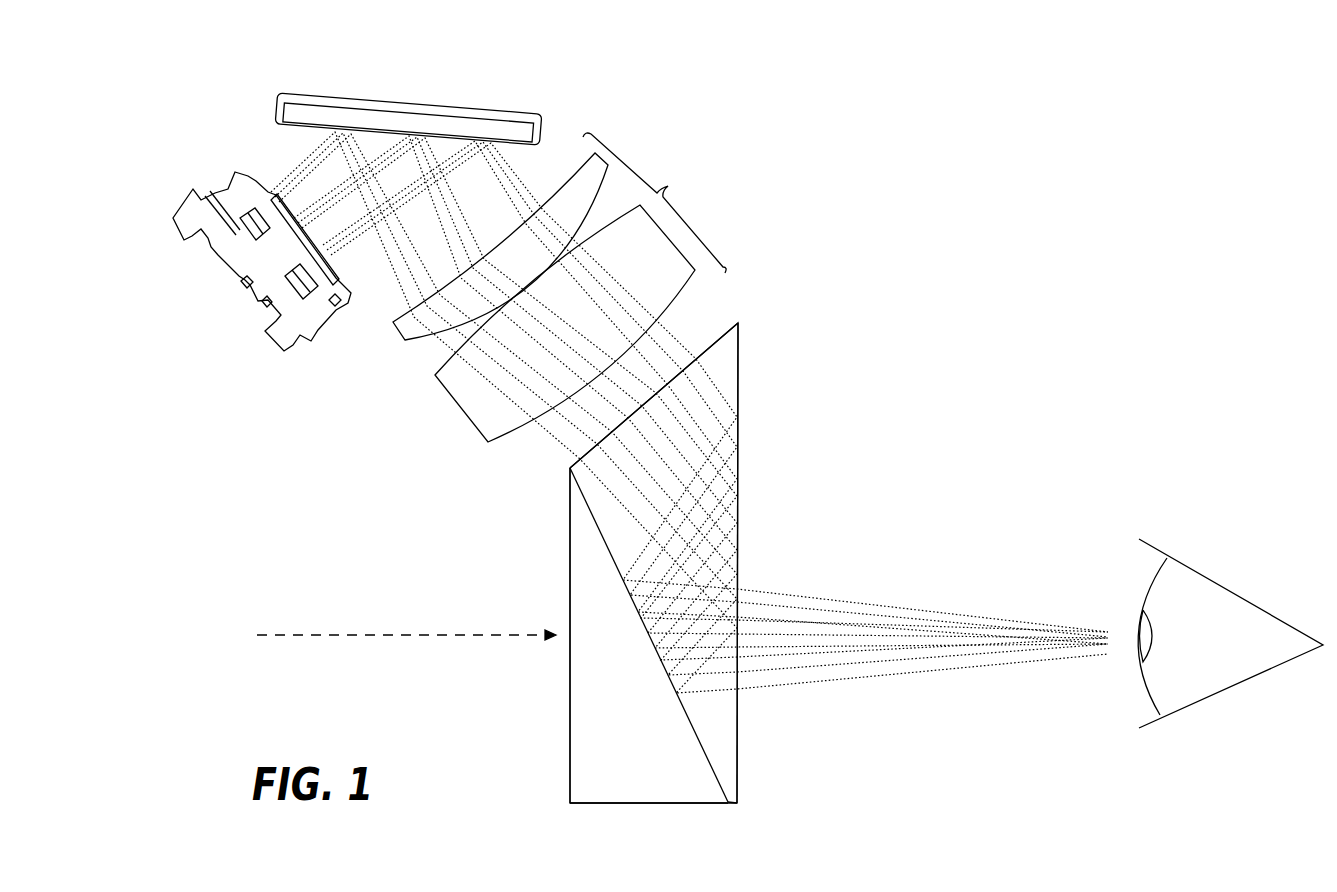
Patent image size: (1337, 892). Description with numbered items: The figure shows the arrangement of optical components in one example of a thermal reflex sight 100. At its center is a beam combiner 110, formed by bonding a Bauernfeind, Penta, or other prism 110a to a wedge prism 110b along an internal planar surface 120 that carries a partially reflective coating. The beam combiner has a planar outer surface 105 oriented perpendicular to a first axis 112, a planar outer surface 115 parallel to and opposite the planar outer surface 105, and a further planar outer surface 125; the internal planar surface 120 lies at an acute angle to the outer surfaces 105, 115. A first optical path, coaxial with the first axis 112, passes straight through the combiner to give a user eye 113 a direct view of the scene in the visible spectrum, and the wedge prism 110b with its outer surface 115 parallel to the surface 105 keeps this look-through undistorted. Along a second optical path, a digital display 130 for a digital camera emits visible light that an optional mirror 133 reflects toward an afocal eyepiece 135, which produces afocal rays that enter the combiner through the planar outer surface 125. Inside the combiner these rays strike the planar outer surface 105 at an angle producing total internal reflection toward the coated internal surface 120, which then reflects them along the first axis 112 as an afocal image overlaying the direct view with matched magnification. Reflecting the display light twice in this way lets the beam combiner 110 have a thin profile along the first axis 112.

The thermal reflex sight 100 is at (220, 92).
The planar outer surface 105 is at (738, 362).
The beam combiner 110 is at (800, 458).
The prism 110a is at (725, 747).
The wedge prism 110b is at (640, 797).
The first axis 112 is at (412, 630).
The user eye 113 is at (1197, 703).
The planar outer surface 115 is at (570, 690).
The internal planar surface 120 is at (582, 502).
The planar outer surface 125 is at (658, 392).
The digital display 130 is at (204, 327).
The mirror 133 is at (428, 100).
The afocal eyepiece 135 is at (559, 287).